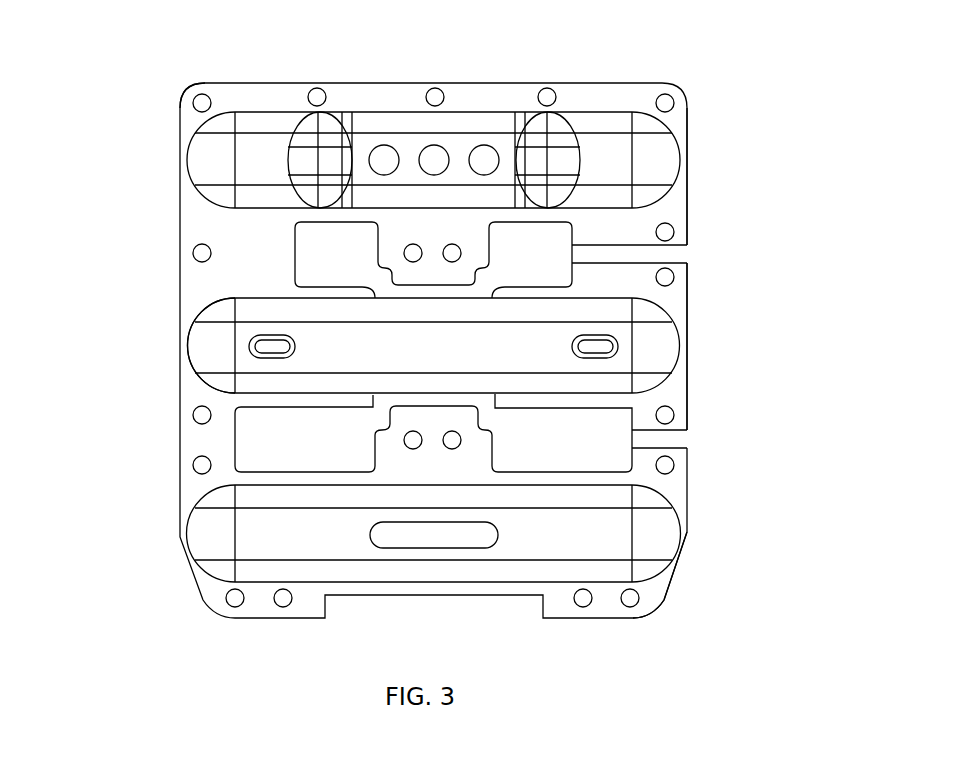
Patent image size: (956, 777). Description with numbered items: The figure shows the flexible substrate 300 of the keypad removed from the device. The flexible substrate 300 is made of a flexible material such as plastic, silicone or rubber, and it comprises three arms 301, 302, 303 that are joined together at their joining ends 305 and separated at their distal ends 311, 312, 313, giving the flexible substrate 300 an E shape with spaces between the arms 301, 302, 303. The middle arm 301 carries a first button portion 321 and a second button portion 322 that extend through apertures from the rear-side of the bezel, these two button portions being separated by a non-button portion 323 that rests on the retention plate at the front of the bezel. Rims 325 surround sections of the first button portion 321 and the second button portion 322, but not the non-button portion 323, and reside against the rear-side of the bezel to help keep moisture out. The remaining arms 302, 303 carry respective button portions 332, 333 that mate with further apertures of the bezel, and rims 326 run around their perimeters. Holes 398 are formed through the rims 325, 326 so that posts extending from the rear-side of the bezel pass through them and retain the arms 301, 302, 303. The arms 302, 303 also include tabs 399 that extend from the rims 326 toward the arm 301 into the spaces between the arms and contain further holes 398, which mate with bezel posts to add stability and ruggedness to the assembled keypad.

The flexible substrate 300 is at (103, 32).
The joining ends 305 is at (208, 80).
The rims 326 is at (383, 95).
The button portion 332 is at (468, 118).
The holes 398 is at (665, 98).
The arm 302 is at (690, 111).
The distal end 312 is at (681, 158).
The rims 325 is at (242, 283).
The tabs 399 is at (393, 252).
The non-button portion 323 is at (205, 347).
The first button portion 321 is at (296, 348).
The second button portion 322 is at (574, 347).
The distal end 311 is at (681, 345).
The arm 301 is at (690, 427).
The distal end 313 is at (681, 530).
The button portion 333 is at (418, 533).
The arm 303 is at (663, 596).